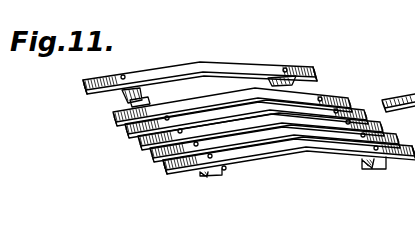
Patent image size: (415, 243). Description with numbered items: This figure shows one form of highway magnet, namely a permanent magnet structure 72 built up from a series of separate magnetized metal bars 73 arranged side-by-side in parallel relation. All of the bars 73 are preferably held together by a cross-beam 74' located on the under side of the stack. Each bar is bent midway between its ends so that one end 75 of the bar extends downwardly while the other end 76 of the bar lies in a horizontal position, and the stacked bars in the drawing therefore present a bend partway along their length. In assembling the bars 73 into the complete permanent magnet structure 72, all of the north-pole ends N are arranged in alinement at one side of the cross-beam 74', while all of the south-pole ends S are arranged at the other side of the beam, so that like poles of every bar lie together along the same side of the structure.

The magnet structure 72 is at (230, 63).
The magnetized metal bars 73 is at (157, 72).
The cross-beam 74' is at (254, 142).
The downwardly extending bar end 75 is at (303, 65).
The horizontal bar end 76 is at (82, 87).
The south-pole ends S is at (317, 72).
The north-pole ends N is at (113, 115).